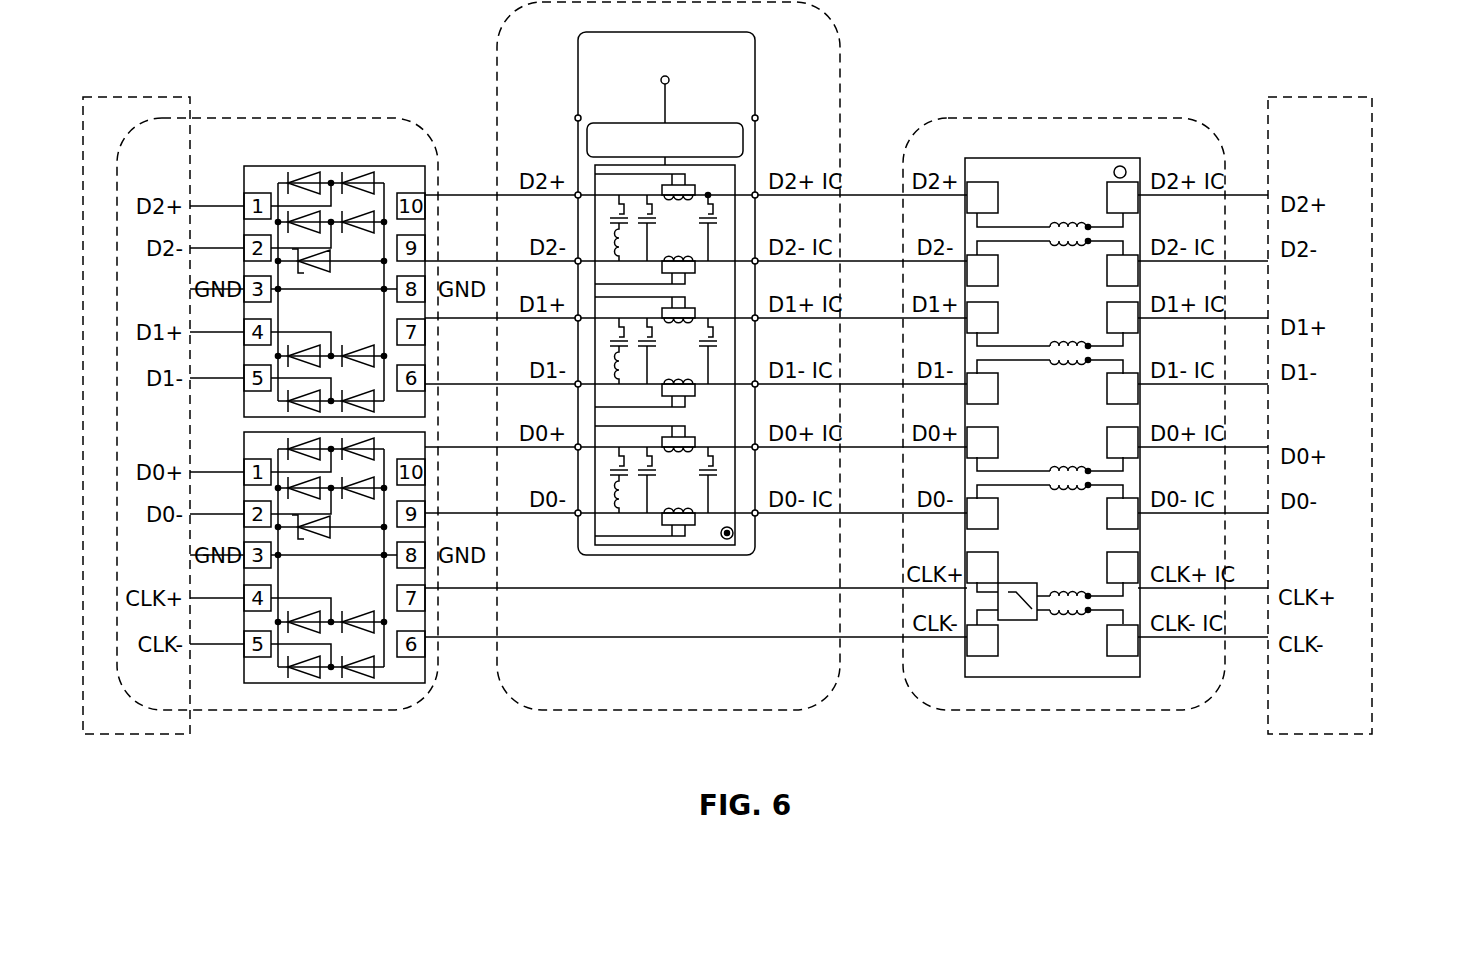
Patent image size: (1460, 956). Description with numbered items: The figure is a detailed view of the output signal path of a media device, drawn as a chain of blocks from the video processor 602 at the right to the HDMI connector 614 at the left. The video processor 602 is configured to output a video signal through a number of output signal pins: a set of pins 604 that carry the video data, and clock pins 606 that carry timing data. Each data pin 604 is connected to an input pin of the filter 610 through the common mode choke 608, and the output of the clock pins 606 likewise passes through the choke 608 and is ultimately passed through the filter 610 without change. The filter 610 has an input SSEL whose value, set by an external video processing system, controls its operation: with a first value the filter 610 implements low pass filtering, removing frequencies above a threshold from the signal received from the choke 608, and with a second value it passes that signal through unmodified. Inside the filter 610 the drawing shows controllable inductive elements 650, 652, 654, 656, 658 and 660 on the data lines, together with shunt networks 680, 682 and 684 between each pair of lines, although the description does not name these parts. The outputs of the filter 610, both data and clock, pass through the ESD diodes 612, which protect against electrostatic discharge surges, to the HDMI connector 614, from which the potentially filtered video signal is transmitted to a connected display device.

The video processor 602 is at (1312, 734).
The set of pins 604 is at (1375, 202).
The clock pins 606 is at (1375, 597).
The common mode choke 608 is at (1017, 710).
The filter 610 is at (605, 710).
The ESD diodes 612 is at (300, 710).
The HDMI connector 614 is at (135, 734).
The controllable inductor D2+ 650 is at (686, 176).
The controllable inductor D2- 652 is at (687, 286).
The controllable inductor D1+ 654 is at (687, 299).
The controllable inductor D1- 656 is at (687, 408).
The controllable inductor D0+ 658 is at (687, 428).
The controllable inductor D0- 660 is at (686, 538).
The shunt capacitor network D2 680 is at (598, 223).
The shunt capacitor network D1 682 is at (598, 357).
The shunt capacitor network D0 684 is at (597, 491).